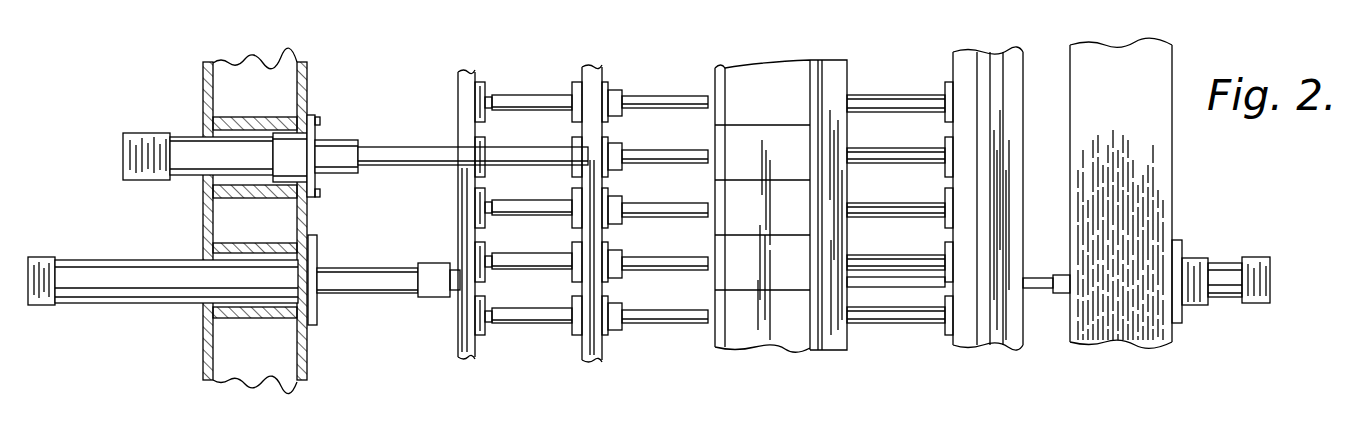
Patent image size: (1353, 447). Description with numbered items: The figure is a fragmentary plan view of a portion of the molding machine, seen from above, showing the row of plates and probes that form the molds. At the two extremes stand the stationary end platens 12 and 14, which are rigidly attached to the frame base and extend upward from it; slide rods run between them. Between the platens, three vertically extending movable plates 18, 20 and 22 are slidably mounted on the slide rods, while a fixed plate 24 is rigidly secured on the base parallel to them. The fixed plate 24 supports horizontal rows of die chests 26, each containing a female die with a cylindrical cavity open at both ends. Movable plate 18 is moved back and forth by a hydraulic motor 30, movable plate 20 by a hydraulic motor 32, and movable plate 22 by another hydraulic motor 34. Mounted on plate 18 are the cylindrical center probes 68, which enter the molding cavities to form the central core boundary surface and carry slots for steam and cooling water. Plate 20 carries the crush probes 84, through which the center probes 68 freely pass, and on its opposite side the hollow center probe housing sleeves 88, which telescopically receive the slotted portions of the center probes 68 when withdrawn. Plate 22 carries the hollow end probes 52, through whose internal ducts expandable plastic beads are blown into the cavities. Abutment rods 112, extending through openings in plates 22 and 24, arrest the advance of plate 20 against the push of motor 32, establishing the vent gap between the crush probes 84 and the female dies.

The stationary end platen 12 is at (1130, 322).
The stationary end platen 14 is at (306, 370).
The movable plate 18 is at (458, 341).
The movable plate 20 is at (588, 350).
The movable plate 22 is at (1014, 336).
The fixed plate 24 is at (838, 342).
The die chest 26 is at (777, 333).
The hydraulic motor 30 is at (373, 242).
The hydraulic motor 32 is at (148, 172).
The hydraulic motor 34 is at (1245, 232).
The end probe 52 is at (908, 153).
The center probe 68 is at (677, 104).
The crush probe 84 is at (613, 92).
The center probe housing sleeve 88 is at (533, 100).
The abutment rod 112 is at (888, 285).